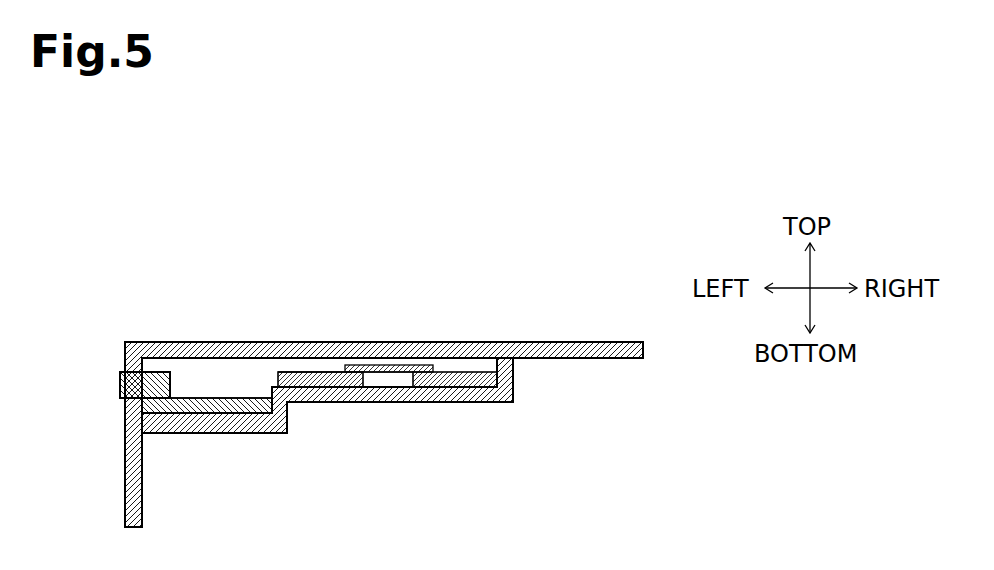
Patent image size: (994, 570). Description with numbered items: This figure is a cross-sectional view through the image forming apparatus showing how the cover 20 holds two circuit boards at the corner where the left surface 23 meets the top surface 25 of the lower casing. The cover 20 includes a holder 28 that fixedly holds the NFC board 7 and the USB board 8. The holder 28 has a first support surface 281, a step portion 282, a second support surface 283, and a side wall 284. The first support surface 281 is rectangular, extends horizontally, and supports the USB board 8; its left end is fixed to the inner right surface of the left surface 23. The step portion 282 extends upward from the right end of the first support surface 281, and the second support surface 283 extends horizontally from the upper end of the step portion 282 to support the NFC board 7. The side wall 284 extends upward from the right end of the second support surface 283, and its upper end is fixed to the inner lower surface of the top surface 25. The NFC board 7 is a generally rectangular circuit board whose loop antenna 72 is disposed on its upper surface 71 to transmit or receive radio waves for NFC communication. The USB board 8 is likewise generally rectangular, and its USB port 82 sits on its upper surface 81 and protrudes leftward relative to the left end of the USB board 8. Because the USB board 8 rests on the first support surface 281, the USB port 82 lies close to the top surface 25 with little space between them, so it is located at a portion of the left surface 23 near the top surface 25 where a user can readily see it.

The cover 20 is at (594, 342).
The top surface 25 is at (543, 342).
The left surface 23 is at (125, 487).
The holder 28 is at (516, 403).
The first support surface 281 is at (221, 413).
The step portion 282 is at (288, 425).
The second support surface 283 is at (453, 386).
The side wall 284 is at (515, 380).
The NFC board 7 is at (287, 371).
The upper surface 71 is at (314, 371).
The loop antenna 72 is at (424, 365).
The USB board 8 is at (232, 395).
The upper surface 81 is at (187, 396).
The USB port 82 is at (120, 382).